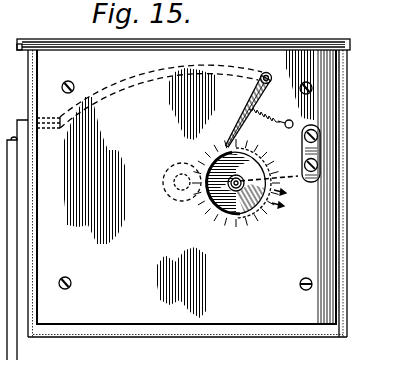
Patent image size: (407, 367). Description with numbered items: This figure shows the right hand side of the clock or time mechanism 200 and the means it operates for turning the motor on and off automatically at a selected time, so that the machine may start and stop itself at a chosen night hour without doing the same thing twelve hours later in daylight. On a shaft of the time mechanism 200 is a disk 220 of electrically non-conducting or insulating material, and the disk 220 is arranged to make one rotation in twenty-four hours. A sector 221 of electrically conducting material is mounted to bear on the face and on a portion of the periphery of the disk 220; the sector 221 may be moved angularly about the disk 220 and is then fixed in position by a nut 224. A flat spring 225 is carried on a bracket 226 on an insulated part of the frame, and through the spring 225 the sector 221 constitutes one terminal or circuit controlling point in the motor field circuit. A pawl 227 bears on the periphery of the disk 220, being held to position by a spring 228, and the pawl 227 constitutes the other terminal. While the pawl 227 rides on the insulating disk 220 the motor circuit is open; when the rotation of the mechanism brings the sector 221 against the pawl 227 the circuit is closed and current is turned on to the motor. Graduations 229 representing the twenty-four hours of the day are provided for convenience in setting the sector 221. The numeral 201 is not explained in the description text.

The clock or time mechanism 200 is at (122, 316).
The frame 201 is at (283, 337).
The disk 220 is at (234, 236).
The sector 221 is at (284, 206).
The nut 224 is at (200, 210).
The flat spring 225 is at (291, 183).
The bracket 226 is at (318, 172).
The pawl 227 is at (246, 110).
The spring 228 is at (274, 115).
The graduations 229 is at (238, 195).